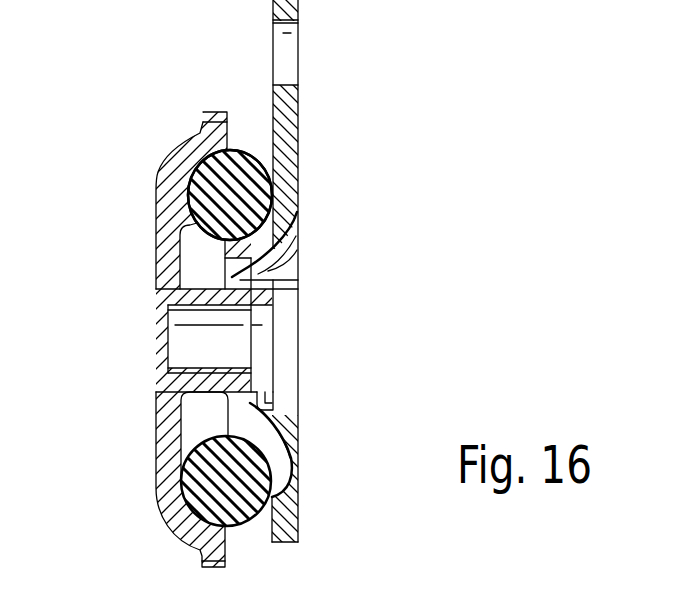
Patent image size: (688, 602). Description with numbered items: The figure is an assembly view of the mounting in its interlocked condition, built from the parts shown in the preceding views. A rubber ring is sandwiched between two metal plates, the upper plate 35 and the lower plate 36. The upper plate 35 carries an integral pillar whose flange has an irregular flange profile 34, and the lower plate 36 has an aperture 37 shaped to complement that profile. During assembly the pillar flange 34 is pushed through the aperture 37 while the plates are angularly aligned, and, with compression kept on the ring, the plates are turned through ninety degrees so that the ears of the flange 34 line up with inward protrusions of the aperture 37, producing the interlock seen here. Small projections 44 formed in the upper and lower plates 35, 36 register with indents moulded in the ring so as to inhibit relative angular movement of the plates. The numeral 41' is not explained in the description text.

The flange profile 34 is at (203, 383).
The upper plate 35 is at (172, 158).
The lower plate 36 is at (287, 130).
The aperture 37 is at (268, 281).
The ball 41' is at (230, 141).
The small projections 44 is at (188, 201).